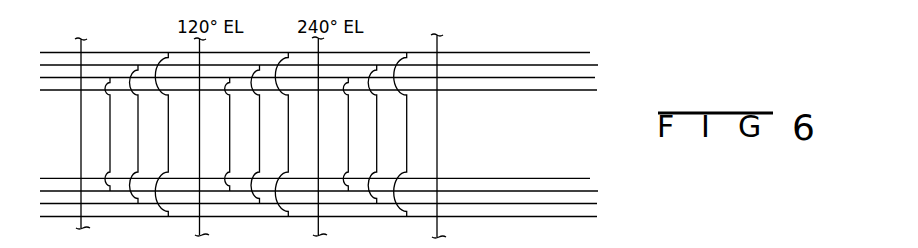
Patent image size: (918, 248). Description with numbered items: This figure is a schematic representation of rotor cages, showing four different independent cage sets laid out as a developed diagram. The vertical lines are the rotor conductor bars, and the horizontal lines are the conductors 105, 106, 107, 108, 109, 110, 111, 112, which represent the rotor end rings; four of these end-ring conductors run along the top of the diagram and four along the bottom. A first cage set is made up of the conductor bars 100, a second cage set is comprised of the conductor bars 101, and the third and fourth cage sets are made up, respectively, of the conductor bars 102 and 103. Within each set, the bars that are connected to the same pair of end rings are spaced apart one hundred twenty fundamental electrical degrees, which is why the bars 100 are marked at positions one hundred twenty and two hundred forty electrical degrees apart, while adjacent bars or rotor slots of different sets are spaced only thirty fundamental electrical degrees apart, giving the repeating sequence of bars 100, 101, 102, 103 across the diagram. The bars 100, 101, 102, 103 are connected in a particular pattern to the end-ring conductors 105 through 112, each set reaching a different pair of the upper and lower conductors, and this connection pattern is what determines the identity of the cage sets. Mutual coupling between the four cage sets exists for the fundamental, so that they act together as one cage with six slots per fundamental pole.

The conductor bars 100 is at (81, 153).
The conductor bars 101 is at (109, 113).
The conductor bars 102 is at (138, 125).
The conductor bars 103 is at (167, 113).
The conductor 105 is at (588, 52).
The conductor 106 is at (598, 65).
The conductor 107 is at (595, 78).
The conductor 108 is at (597, 90).
The conductor 109 is at (590, 178).
The conductor 110 is at (598, 191).
The conductor 111 is at (597, 204).
The conductor 112 is at (597, 216).